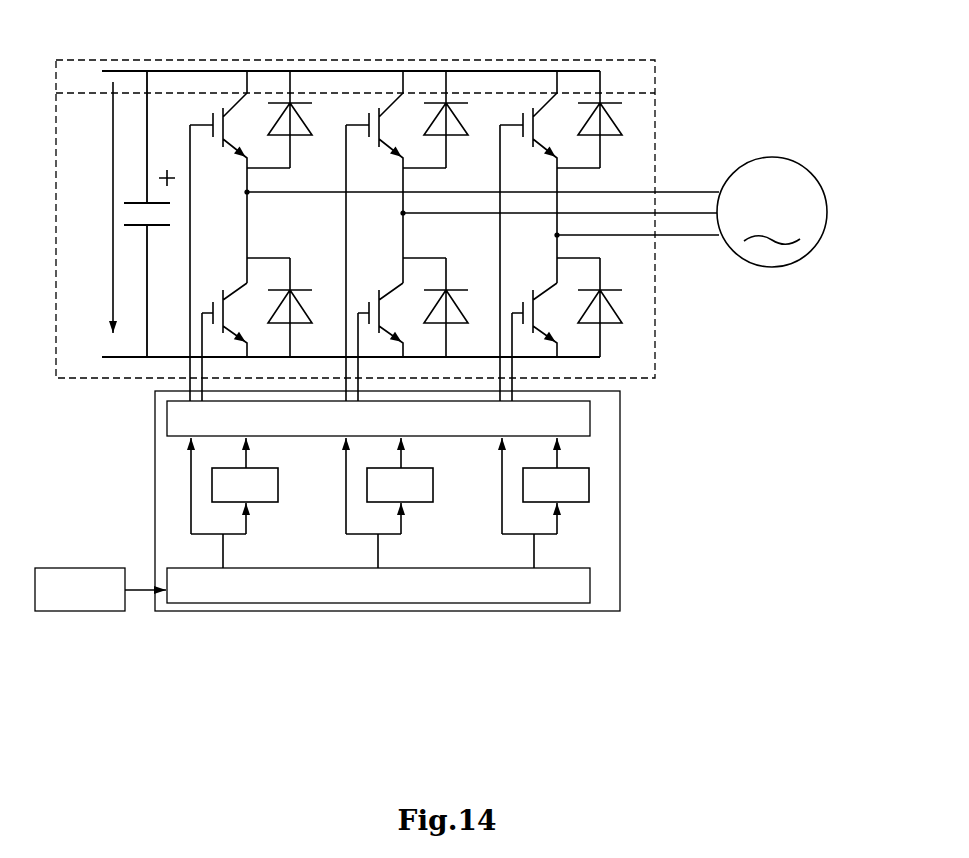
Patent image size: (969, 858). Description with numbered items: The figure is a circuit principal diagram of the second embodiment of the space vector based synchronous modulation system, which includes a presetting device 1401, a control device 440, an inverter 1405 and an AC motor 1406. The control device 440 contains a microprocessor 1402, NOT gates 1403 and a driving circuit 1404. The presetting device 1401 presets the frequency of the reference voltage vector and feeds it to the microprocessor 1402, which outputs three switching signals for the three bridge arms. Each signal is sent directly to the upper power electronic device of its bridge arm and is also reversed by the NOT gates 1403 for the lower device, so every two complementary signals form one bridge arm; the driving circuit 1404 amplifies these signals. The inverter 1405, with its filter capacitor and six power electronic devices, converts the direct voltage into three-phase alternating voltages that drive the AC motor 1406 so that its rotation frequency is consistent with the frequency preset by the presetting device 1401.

The presetting device 1401 is at (65, 568).
The microprocessor 1402 is at (590, 597).
The NOT gates 1403 is at (433, 500).
The driving circuit 1404 is at (590, 418).
The inverter 1405 is at (655, 115).
The AC motor 1406 is at (772, 157).
The control device 440 is at (620, 462).